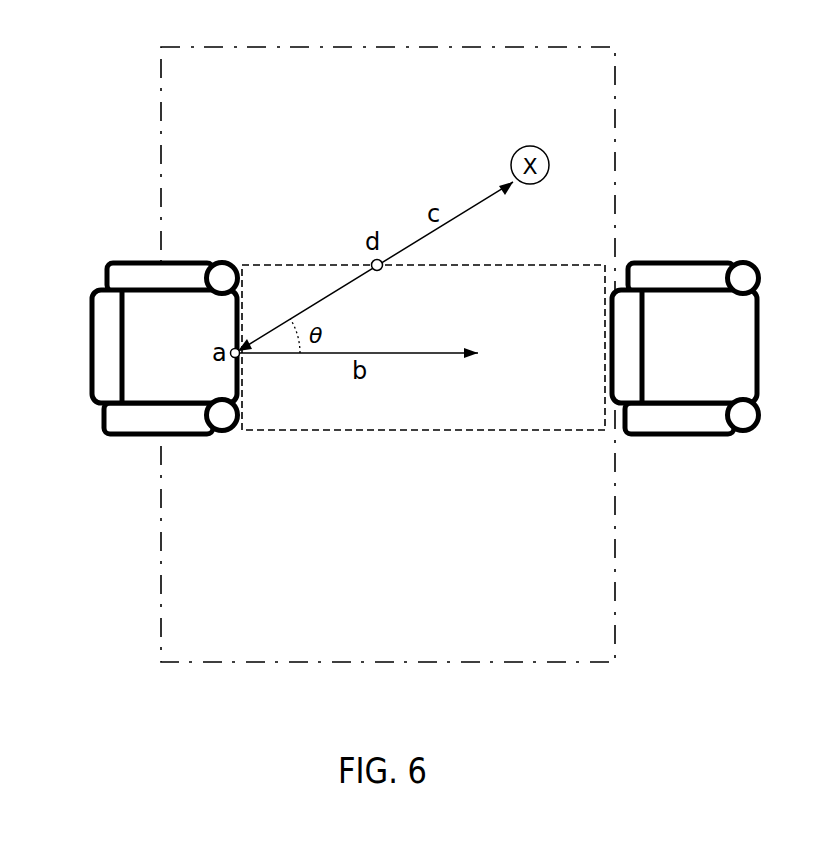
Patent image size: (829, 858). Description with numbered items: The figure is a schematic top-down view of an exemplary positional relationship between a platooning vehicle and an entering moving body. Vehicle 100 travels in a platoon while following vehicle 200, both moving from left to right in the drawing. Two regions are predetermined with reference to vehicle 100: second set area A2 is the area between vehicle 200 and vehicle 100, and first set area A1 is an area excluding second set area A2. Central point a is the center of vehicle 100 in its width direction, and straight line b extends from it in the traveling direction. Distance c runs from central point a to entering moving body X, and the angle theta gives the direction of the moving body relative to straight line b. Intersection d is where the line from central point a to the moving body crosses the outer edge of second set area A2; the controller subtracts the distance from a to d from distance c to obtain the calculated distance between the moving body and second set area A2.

The vehicle 100 is at (110, 263).
The vehicle 200 is at (690, 262).
The first set area A1 is at (620, 80).
The second set area A2 is at (547, 265).